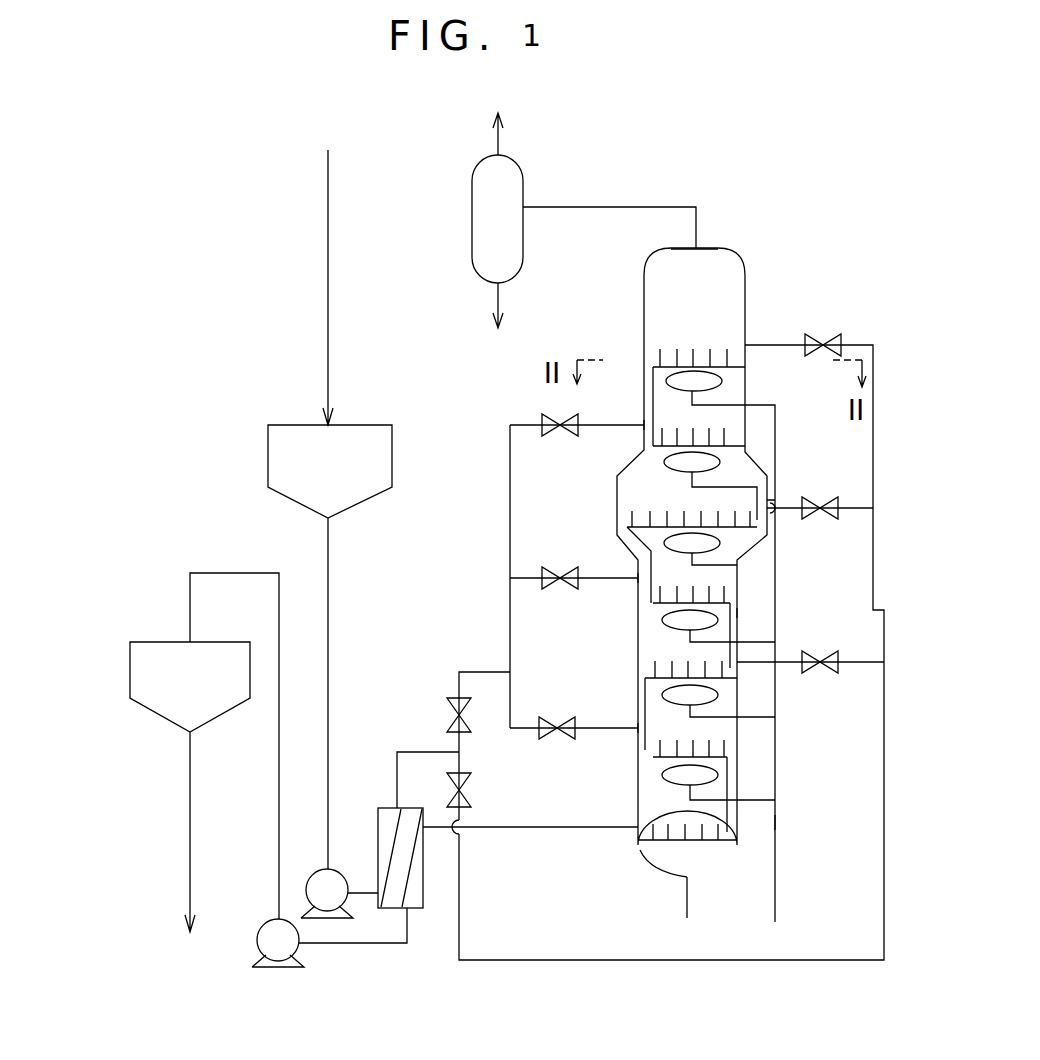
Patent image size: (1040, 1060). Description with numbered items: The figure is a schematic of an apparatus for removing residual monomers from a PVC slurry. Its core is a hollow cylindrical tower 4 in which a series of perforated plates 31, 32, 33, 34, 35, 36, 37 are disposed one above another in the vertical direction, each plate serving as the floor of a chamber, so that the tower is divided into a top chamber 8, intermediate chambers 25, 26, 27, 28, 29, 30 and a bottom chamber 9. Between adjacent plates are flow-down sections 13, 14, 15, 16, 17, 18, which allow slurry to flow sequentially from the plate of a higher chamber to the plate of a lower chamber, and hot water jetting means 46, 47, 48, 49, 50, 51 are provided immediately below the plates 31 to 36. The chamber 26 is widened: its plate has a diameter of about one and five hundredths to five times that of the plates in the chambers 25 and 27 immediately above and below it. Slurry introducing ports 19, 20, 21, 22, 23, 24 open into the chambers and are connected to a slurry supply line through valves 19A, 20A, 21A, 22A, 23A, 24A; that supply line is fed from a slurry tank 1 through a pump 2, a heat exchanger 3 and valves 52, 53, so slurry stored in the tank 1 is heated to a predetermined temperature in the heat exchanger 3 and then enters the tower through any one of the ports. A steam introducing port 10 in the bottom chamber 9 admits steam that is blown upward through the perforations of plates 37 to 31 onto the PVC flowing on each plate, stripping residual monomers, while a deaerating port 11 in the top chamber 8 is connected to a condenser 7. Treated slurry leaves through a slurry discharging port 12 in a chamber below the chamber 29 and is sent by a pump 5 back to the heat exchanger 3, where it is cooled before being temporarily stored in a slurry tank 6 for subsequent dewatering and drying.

The slurry tank 1 is at (358, 425).
The pump 2 is at (333, 878).
The heat exchanger 3 is at (400, 810).
The tower 4 is at (748, 285).
The pump 5 is at (265, 925).
The slurry tank 6 is at (232, 645).
The condenser 7 is at (523, 185).
The top chamber 8 is at (718, 270).
The bottom chamber 9 is at (645, 860).
The steam introducing port 10 is at (682, 880).
The deaerating port 11 is at (694, 246).
The slurry discharging port 12 is at (636, 827).
The flow-down section 13 is at (646, 395).
The flow-down section 14 is at (770, 503).
The flow-down section 15 is at (640, 567).
The flow-down section 16 is at (738, 613).
The flow-down section 17 is at (640, 715).
The flow-down section 18 is at (776, 822).
The slurry introducing port 19 is at (748, 350).
The valve 19A is at (825, 336).
The slurry introducing port 20 is at (643, 428).
The valve 20A is at (555, 415).
The slurry introducing port 21 is at (772, 512).
The valve 21A is at (822, 520).
The slurry introducing port 22 is at (638, 582).
The valve 22A is at (560, 588).
The slurry introducing port 23 is at (742, 665).
The valve 23A is at (822, 674).
The slurry introducing port 24 is at (638, 732).
The valve 24A is at (557, 718).
The chamber 25 is at (740, 405).
The chamber 26 is at (745, 452).
The chamber 27 is at (748, 548).
The chamber 28 is at (720, 635).
The chamber 29 is at (740, 712).
The chamber 30 is at (740, 798).
The plate 31 is at (670, 358).
The plate 32 is at (666, 440).
The plate 33 is at (656, 522).
The plate 34 is at (664, 598).
The plate 35 is at (655, 672).
The plate 36 is at (660, 750).
The plate 37 is at (660, 834).
The hot water jetting means 46 is at (670, 378).
The hot water jetting means 47 is at (665, 462).
The hot water jetting means 48 is at (665, 543).
The hot water jetting means 49 is at (663, 620).
The hot water jetting means 50 is at (663, 695).
The hot water jetting means 51 is at (663, 775).
The valve 52 is at (450, 705).
The valve 53 is at (470, 788).